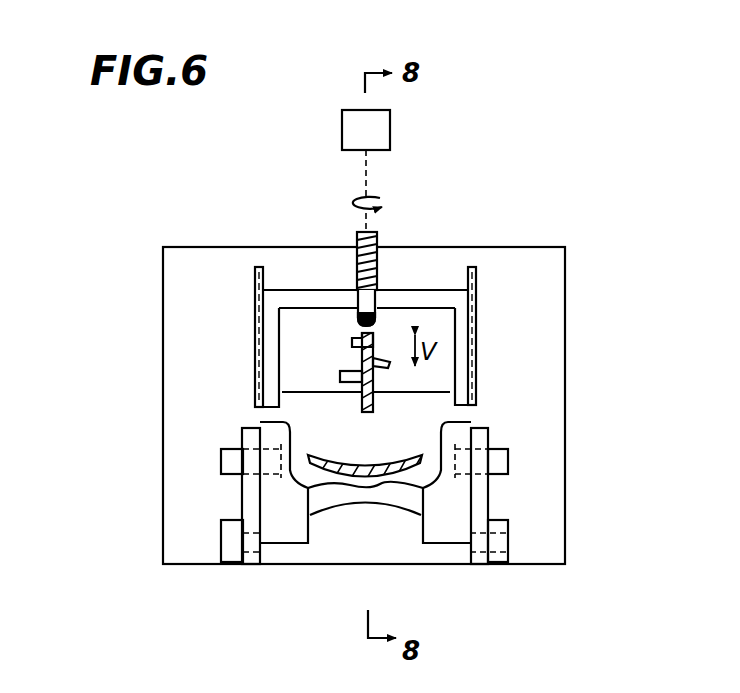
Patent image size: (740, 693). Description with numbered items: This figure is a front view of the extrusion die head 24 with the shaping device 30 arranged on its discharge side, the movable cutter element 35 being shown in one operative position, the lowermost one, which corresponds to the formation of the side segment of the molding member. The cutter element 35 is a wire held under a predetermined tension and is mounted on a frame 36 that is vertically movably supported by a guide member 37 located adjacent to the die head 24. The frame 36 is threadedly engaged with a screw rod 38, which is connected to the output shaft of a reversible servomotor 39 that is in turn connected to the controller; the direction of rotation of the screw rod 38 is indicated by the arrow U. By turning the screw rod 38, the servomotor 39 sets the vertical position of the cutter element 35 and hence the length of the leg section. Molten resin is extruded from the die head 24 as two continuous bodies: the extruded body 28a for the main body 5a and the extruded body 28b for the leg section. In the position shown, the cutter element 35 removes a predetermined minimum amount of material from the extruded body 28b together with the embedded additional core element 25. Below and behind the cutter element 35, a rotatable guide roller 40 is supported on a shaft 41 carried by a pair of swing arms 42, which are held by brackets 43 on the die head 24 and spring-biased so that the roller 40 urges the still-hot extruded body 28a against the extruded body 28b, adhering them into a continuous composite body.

The extrusion die head 24 is at (565, 323).
The shaping device 30 is at (506, 340).
The reversible servomotor 39 is at (342, 121).
The rotation direction U is at (383, 199).
The screw rod 38 is at (357, 233).
The guide member 37 is at (255, 327).
The frame 36 is at (441, 300).
The movable cutter element 35 is at (292, 393).
The additional core element 25 is at (373, 403).
The extruded body for the leg section 28b is at (350, 382).
The swing arms 42 is at (242, 497).
The rotatable guide roller 40 is at (283, 543).
The main body 5a is at (358, 469).
The extruded body for the main body 28a is at (401, 473).
The shaft 41 is at (221, 462).
The brackets 43 is at (221, 543).